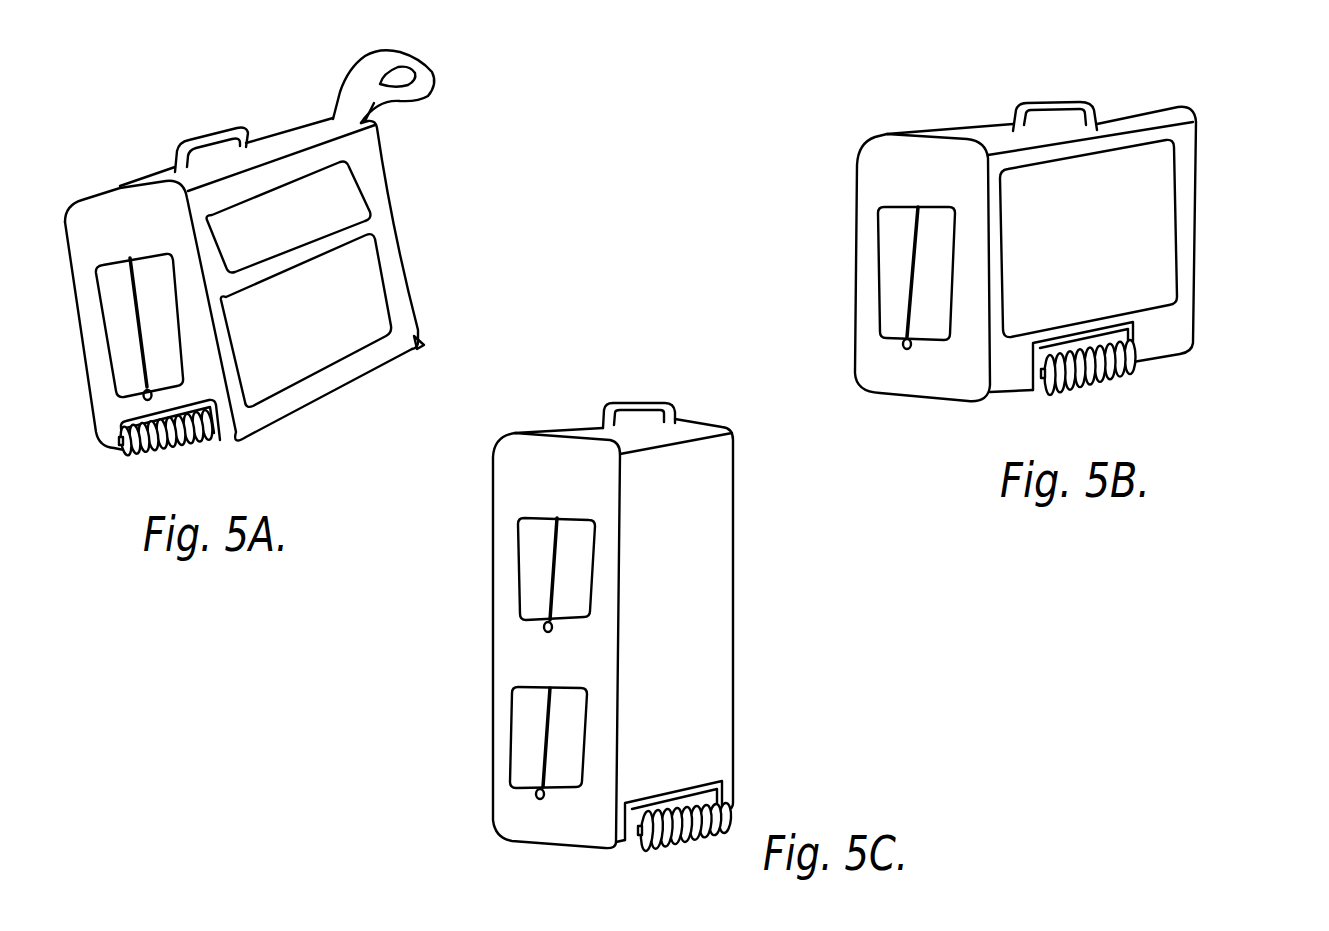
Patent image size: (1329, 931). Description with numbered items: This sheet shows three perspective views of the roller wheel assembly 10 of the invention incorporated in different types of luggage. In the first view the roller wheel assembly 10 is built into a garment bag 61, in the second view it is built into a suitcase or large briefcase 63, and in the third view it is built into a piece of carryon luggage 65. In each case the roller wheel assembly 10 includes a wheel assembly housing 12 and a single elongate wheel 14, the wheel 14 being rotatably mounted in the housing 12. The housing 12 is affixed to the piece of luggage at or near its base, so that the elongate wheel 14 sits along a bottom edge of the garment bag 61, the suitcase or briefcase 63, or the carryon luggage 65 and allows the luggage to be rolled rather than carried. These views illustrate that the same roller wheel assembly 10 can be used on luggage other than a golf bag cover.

In FIG. 5A, the roller wheel assembly 10 is at (191, 464).
In FIG. 5B, the roller wheel assembly 10 is at (1100, 382).
In FIG. 5C, the roller wheel assembly 10 is at (702, 819).
In FIG. 5A, the wheel assembly housing 12 is at (215, 405).
In FIG. 5B, the wheel assembly housing 12 is at (1133, 327).
In FIG. 5C, the wheel assembly housing 12 is at (716, 786).
In FIG. 5A, the single elongate wheel 14 is at (217, 443).
In FIG. 5B, the single elongate wheel 14 is at (1120, 377).
In FIG. 5C, the single elongate wheel 14 is at (728, 811).
In FIG. 5A, the garment bag 61 is at (294, 289).
In FIG. 5B, the suitcase or large briefcase 63 is at (1092, 277).
In FIG. 5C, the carryon luggage 65 is at (685, 652).